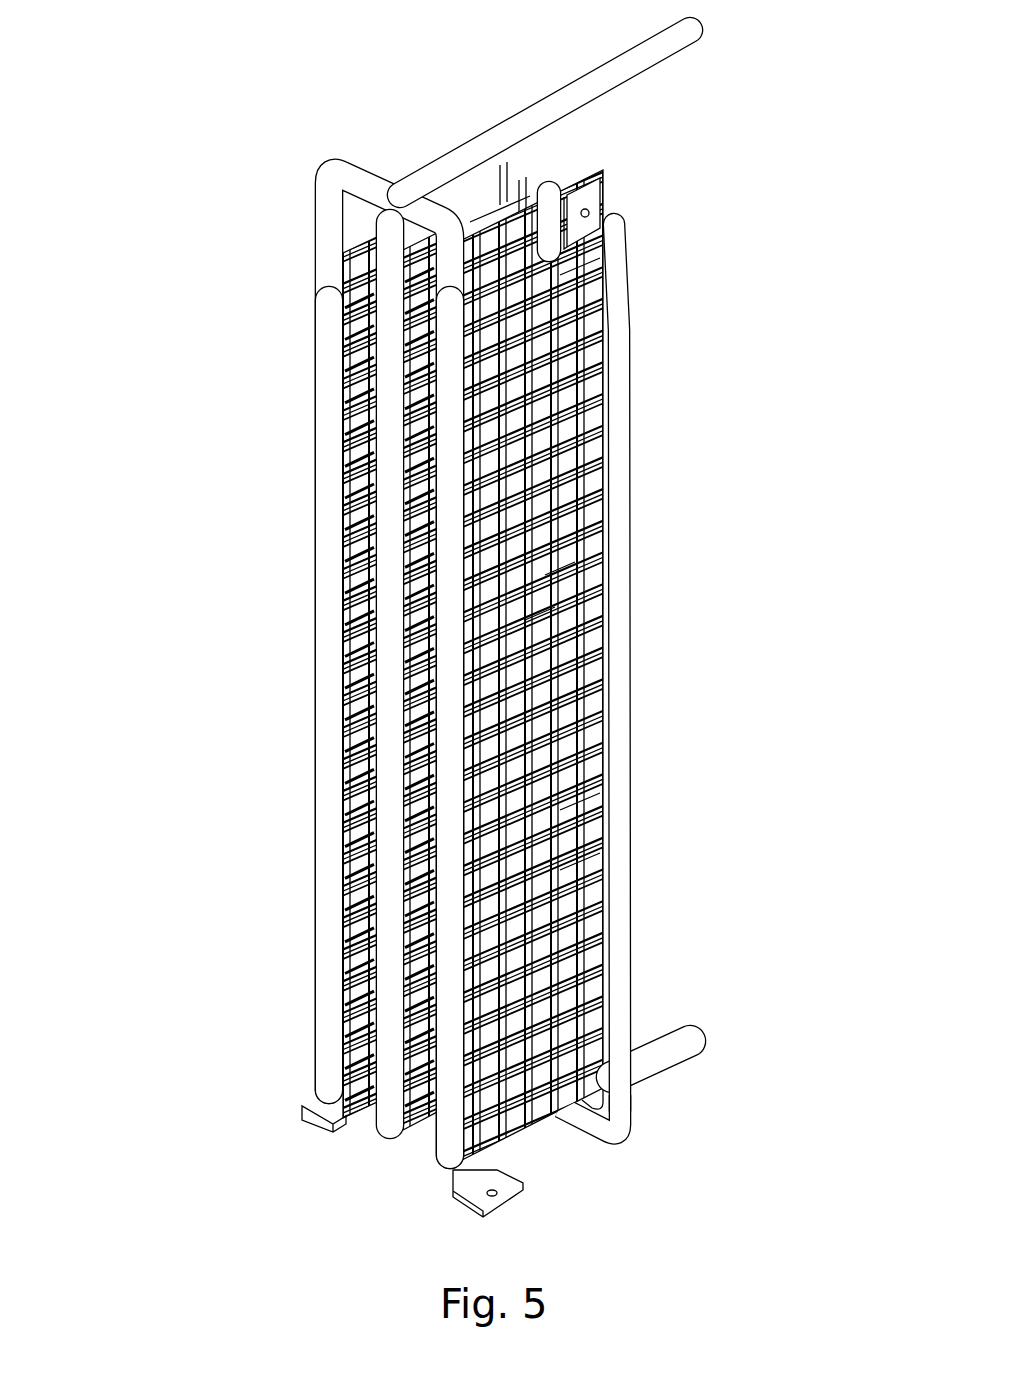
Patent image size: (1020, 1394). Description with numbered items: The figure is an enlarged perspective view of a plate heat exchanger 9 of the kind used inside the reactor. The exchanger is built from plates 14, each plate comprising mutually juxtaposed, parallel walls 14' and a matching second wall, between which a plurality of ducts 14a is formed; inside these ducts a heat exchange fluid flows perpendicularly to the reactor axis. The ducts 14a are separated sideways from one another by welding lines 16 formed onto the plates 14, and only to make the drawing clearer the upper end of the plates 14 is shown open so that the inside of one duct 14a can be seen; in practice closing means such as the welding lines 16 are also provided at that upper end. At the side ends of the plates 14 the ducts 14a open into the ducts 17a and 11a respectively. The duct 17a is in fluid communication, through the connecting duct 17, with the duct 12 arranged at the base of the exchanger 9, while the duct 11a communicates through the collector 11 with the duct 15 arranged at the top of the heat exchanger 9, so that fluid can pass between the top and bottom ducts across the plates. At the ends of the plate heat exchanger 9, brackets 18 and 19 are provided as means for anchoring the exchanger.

The plate heat exchanger 9 is at (419, 641).
The collector 11 is at (325, 205).
The duct 11a is at (450, 608).
The duct 12 is at (660, 1060).
The plate 14 is at (429, 660).
The wall 14' is at (501, 125).
The duct 14a is at (500, 215).
The duct 15 is at (600, 85).
The welding lines 16 is at (573, 858).
The connecting duct 17 is at (612, 1127).
The duct 17a is at (620, 430).
The bracket 18 is at (318, 1118).
The bracket 19 is at (592, 202).